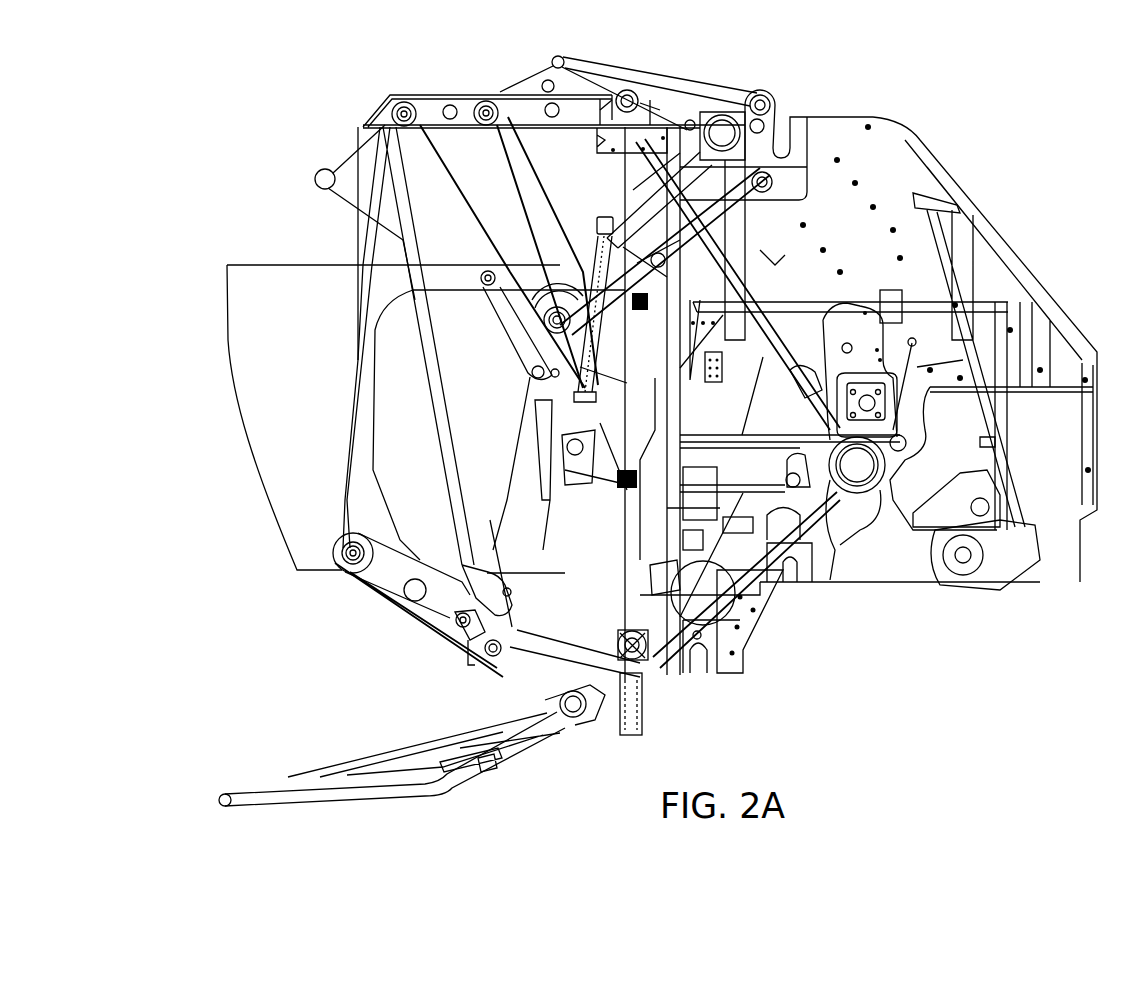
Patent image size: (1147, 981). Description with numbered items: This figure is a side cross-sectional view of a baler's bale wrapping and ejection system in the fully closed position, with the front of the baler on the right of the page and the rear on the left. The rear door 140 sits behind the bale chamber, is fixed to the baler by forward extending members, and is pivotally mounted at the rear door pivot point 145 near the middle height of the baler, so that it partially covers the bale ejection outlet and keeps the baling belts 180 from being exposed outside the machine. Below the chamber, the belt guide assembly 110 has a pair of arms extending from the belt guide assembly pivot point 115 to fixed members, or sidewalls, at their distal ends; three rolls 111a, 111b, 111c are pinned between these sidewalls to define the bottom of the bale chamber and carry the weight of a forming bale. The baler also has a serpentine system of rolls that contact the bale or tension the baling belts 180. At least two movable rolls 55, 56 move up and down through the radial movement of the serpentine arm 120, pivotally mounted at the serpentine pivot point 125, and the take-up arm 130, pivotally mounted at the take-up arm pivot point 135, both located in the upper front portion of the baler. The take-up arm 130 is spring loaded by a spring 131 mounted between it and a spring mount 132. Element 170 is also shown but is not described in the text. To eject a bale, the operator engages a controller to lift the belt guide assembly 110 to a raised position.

The movable roll 55 is at (484, 104).
The movable roll 56 is at (590, 383).
The belt guide assembly 110 is at (390, 565).
The roll 111a is at (347, 568).
The roll 111b is at (493, 660).
The roll 111c is at (643, 667).
The belt guide assembly pivot point 115 is at (550, 317).
The serpentine arm 120 is at (657, 242).
The serpentine pivot point 125 is at (723, 124).
The take-up arm 130 is at (548, 76).
The spring 131 is at (688, 82).
The spring mount 132 is at (766, 97).
The take-up arm pivot point 135 is at (627, 98).
The rear door 140 is at (228, 298).
The rear door pivot point 145 is at (600, 268).
The pivot ring 170 is at (316, 180).
The baling belts 180 is at (378, 230).